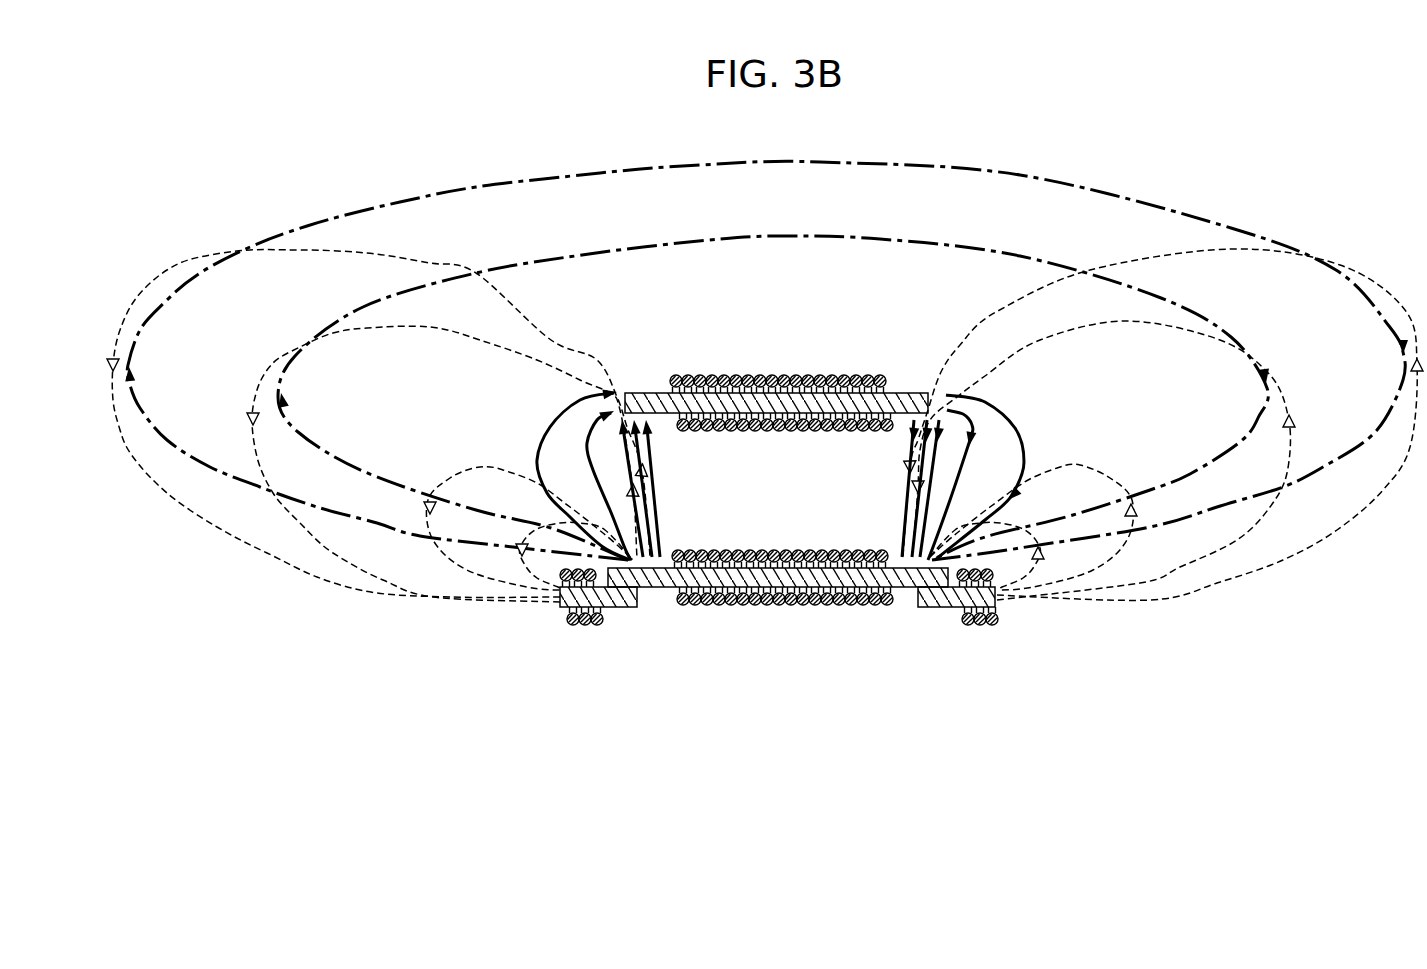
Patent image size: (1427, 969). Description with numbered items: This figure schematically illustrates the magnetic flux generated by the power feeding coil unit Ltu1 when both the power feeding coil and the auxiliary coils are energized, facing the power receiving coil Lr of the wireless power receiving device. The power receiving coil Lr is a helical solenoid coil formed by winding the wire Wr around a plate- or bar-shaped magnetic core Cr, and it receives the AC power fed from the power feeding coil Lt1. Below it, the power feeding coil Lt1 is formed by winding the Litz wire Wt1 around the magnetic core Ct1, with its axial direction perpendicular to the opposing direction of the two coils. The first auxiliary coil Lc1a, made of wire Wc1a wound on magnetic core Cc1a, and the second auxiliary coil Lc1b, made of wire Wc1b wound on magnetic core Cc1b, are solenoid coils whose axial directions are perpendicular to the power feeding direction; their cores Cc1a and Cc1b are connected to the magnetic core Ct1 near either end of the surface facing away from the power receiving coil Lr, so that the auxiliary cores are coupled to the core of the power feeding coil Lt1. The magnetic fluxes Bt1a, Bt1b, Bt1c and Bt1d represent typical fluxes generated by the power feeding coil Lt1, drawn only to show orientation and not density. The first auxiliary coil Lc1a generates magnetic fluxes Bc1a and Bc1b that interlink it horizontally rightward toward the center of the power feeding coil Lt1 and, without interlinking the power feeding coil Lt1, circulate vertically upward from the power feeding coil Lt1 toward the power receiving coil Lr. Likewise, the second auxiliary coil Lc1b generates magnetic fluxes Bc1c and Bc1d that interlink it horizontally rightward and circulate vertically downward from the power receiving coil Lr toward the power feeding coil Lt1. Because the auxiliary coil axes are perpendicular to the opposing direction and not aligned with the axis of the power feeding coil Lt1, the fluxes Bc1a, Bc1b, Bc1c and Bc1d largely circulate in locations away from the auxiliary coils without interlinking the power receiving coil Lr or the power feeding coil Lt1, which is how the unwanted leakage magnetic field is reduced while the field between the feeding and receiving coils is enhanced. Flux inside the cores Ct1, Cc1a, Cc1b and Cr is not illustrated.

The magnetic flux Bt1a is at (598, 397).
The magnetic flux Bt1b is at (605, 440).
The magnetic flux Bt1c is at (901, 240).
The magnetic flux Bt1d is at (861, 164).
The magnetic flux Bc1a is at (350, 596).
The magnetic flux Bc1b is at (430, 600).
The magnetic flux Bc1c is at (1230, 582).
The magnetic flux Bc1d is at (1140, 584).
The power receiving coil Lr is at (776, 360).
The magnetic core Cr is at (742, 375).
The wire Wr is at (723, 326).
The power feeding coil unit Ltu1 is at (785, 662).
The power feeding coil Lt1 is at (778, 637).
The magnetic core Ct1 is at (805, 590).
The wire Wt1 is at (837, 688).
The first auxiliary coil Lc1a is at (610, 647).
The magnetic core Cc1a is at (632, 608).
The wire Wc1a is at (572, 630).
The second auxiliary coil Lc1b is at (959, 647).
The magnetic core Cc1b is at (925, 608).
The wire Wc1b is at (992, 630).